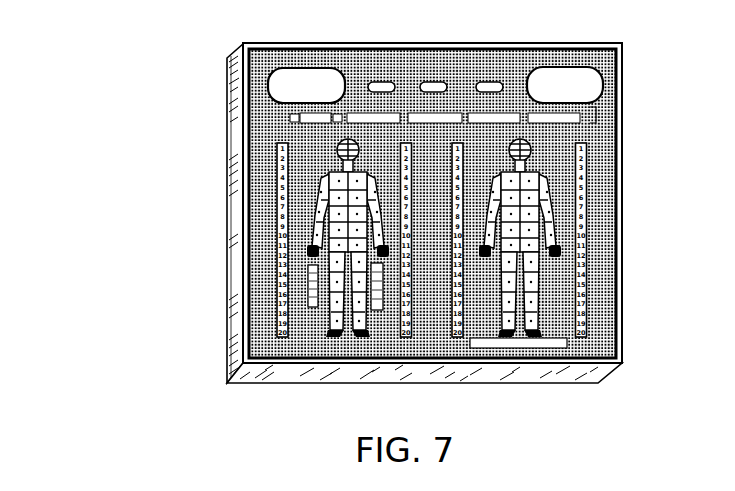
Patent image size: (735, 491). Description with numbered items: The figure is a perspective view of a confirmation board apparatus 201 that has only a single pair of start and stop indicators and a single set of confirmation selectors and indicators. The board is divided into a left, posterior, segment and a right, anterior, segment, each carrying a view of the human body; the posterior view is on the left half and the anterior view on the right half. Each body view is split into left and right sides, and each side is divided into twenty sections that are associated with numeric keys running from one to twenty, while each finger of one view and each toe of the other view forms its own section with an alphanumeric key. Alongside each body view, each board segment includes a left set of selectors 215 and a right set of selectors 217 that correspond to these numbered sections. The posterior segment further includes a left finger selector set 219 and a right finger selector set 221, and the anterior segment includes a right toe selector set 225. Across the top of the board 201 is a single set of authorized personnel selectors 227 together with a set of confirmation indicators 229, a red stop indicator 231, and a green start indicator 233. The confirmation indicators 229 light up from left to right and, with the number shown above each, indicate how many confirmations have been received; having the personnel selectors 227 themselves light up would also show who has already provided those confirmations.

The confirmation board apparatus 201 is at (203, 40).
The left set of selectors 215 is at (276, 273).
The right set of selectors 217 is at (412, 338).
The left finger selector set 219 is at (310, 308).
The right finger selector set 221 is at (382, 311).
The right toe selector set 225 is at (618, 351).
The authorized personnel selectors 227 is at (597, 117).
The confirmation indicators 229 is at (507, 63).
The stop indicator 231 is at (547, 48).
The start indicator 233 is at (300, 62).